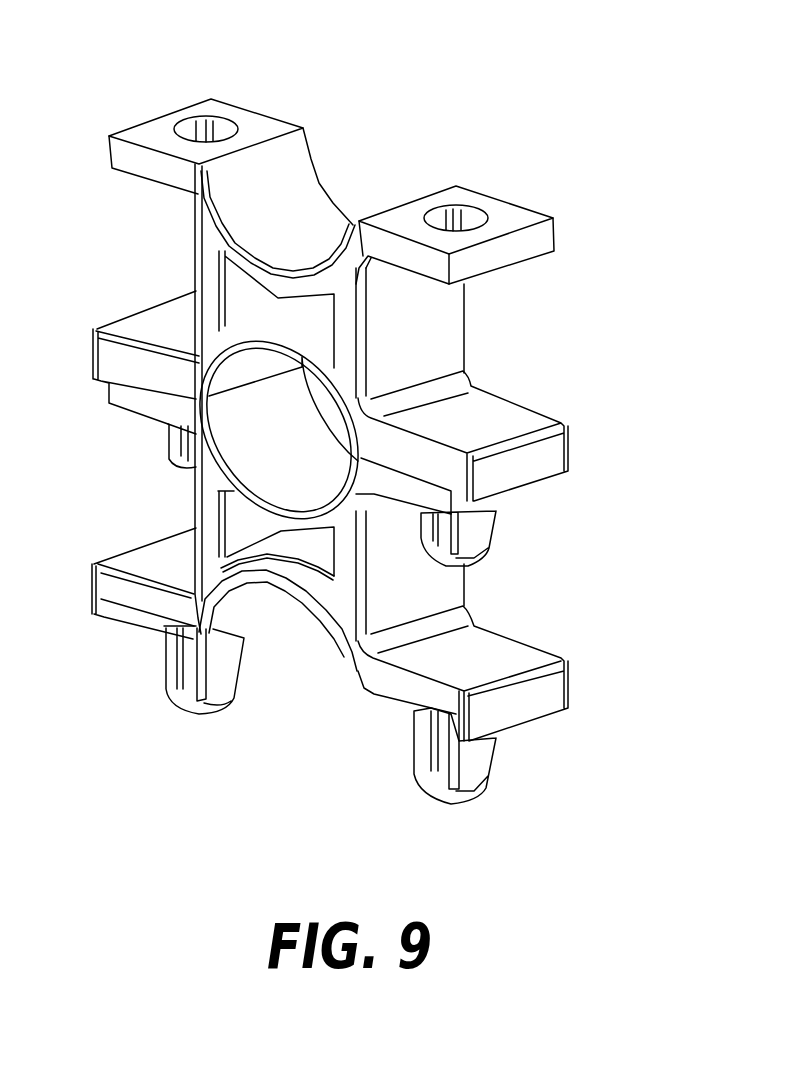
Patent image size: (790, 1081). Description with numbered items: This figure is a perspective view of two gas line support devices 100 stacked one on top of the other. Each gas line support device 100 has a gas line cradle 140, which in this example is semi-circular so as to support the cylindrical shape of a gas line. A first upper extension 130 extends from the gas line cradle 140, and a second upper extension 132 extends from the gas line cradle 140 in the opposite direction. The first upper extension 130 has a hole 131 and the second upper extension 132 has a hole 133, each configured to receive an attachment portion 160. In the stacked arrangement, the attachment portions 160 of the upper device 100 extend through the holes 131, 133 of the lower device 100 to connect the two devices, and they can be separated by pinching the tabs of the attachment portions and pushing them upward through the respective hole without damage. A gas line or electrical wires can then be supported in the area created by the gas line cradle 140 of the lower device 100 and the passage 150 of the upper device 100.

The gas line support device 100 is at (588, 323).
The first upper extension 130 is at (206, 104).
The hole 131 is at (228, 128).
The second upper extension 132 is at (460, 203).
The hole 133 is at (477, 210).
The gas line cradle 140 is at (313, 192).
The passage 150 is at (240, 365).
The attachment portion 160 is at (187, 470).